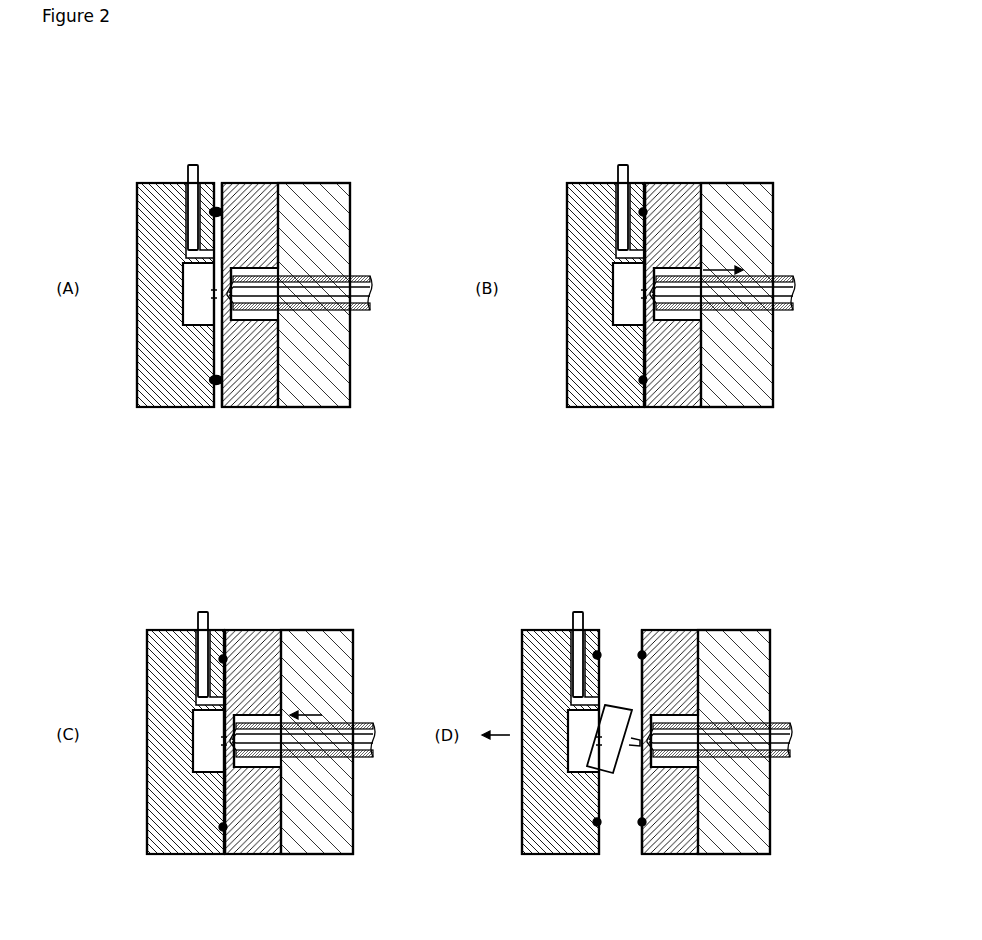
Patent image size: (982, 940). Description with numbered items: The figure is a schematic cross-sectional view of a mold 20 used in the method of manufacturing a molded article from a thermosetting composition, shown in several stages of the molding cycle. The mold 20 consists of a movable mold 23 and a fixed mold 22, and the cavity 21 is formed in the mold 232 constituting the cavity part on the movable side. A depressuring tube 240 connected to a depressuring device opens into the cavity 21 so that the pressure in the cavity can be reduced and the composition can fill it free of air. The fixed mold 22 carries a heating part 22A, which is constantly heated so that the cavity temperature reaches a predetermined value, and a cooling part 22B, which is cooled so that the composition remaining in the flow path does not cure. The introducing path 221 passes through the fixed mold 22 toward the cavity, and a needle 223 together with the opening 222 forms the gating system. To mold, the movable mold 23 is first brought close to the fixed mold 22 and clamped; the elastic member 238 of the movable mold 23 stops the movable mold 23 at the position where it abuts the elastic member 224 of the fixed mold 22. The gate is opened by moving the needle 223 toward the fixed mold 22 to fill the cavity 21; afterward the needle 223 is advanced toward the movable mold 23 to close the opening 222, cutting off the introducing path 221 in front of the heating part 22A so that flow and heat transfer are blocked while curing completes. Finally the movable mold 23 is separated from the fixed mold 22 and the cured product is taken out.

The mold 20 is at (147, 168).
The cavity 21 is at (183, 273).
The fixed mold 22 is at (336, 111).
The heating part 22A is at (265, 372).
The cooling part 22B is at (335, 375).
The movable mold 23 is at (170, 222).
The introducing path 221 is at (355, 291).
The opening 222 is at (215, 296).
The needle 223 is at (320, 268).
The elastic member 224 is at (252, 200).
The mold constituting the cavity part 232 is at (228, 294).
The elastic member 238 is at (216, 206).
The depressuring tube 240 is at (188, 173).